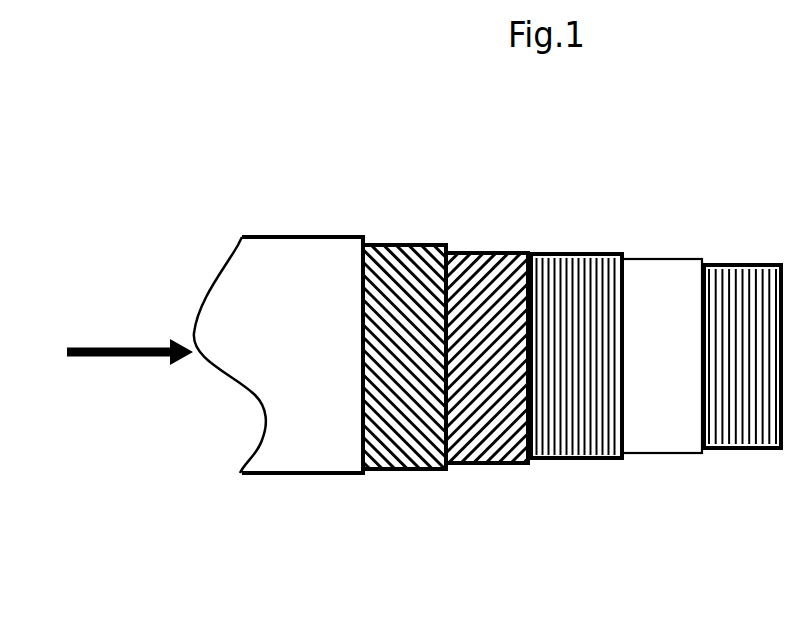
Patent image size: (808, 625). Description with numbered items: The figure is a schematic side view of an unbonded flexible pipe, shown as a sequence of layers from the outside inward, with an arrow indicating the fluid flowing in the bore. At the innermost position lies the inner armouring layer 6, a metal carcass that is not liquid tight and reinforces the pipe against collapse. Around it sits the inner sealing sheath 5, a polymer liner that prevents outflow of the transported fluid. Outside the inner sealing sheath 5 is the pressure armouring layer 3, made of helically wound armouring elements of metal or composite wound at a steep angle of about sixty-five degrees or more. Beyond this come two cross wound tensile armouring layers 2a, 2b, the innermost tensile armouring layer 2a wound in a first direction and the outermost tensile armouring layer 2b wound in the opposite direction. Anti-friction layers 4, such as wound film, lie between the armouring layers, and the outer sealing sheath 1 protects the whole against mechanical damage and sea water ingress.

The outer sealing sheath 1 is at (293, 255).
The innermost tensile armouring layer 2a is at (483, 267).
The outermost tensile armouring layer 2b is at (398, 258).
The pressure armouring layer 3 is at (583, 430).
The anti-friction layers 4 is at (448, 461).
The inner sealing sheath 5 is at (658, 442).
The inner armouring layer 6 is at (743, 442).